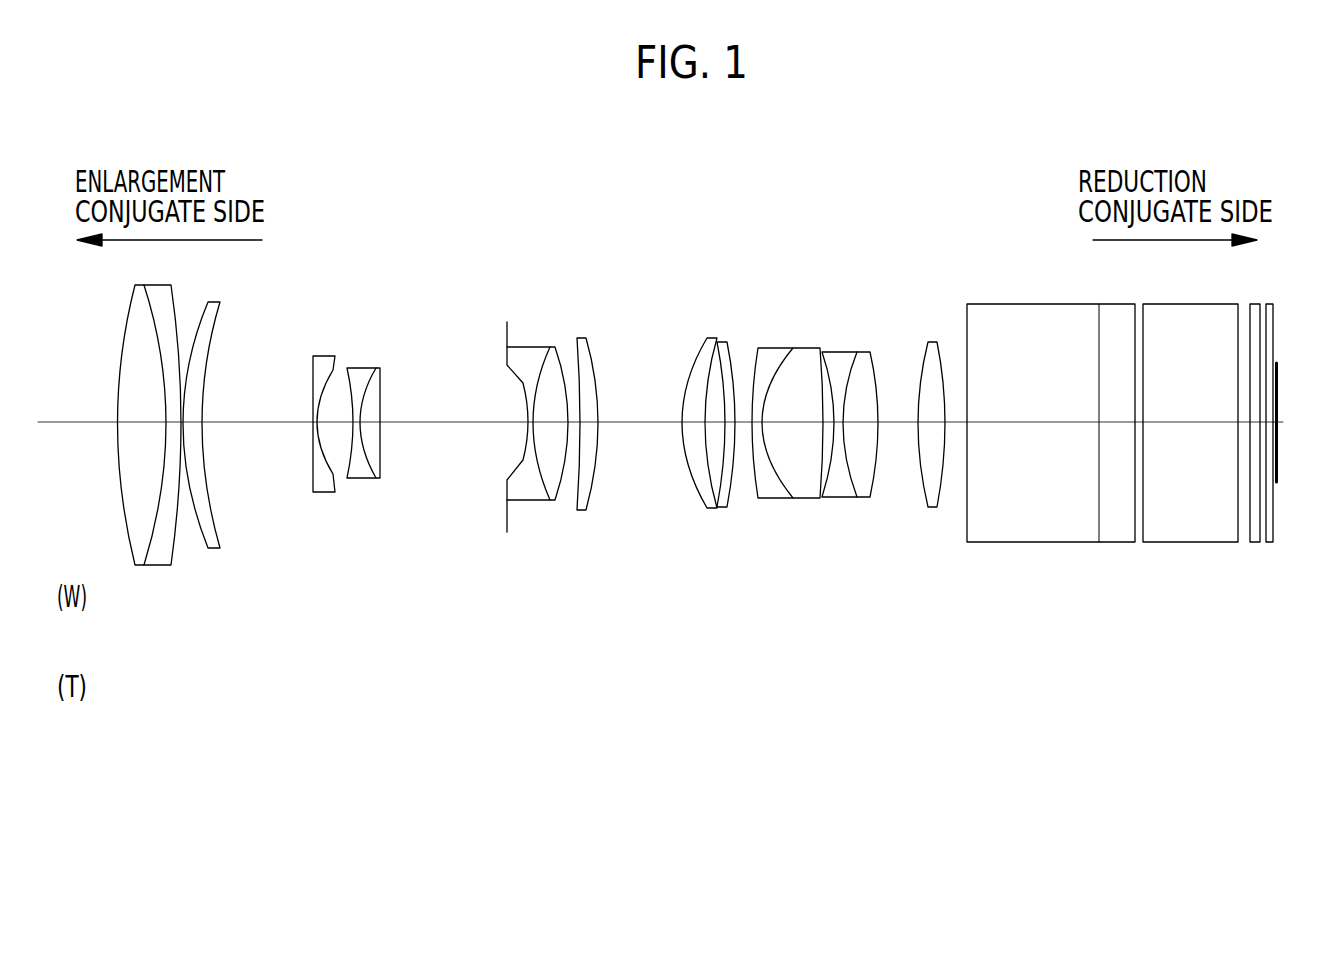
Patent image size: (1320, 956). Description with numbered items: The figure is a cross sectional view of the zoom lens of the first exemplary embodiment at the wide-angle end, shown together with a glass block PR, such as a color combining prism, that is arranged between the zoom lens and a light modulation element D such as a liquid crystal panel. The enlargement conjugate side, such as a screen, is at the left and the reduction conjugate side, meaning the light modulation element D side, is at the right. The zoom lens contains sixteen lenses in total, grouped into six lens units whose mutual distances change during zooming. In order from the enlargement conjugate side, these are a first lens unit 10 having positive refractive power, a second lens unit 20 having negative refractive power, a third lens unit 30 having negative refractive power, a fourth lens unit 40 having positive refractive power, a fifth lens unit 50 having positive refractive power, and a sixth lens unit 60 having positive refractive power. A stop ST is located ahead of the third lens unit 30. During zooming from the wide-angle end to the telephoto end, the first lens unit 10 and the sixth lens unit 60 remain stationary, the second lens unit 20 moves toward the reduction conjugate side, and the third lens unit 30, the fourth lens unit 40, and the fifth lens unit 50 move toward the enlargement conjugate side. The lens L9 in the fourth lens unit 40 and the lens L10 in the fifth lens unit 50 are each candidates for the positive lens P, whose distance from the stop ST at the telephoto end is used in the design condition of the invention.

The first lens unit 10 is at (223, 590).
The second lens unit 20 is at (385, 590).
The third lens unit 30 is at (555, 590).
The fourth lens unit 40 is at (586, 474).
The fifth lens unit 50 is at (778, 476).
The sixth lens unit 60 is at (943, 590).
The stop ST is at (507, 322).
The lens L9 is at (577, 338).
The lens L10 is at (703, 340).
The glass block PR is at (1275, 590).
The light modulation element D is at (1288, 410).